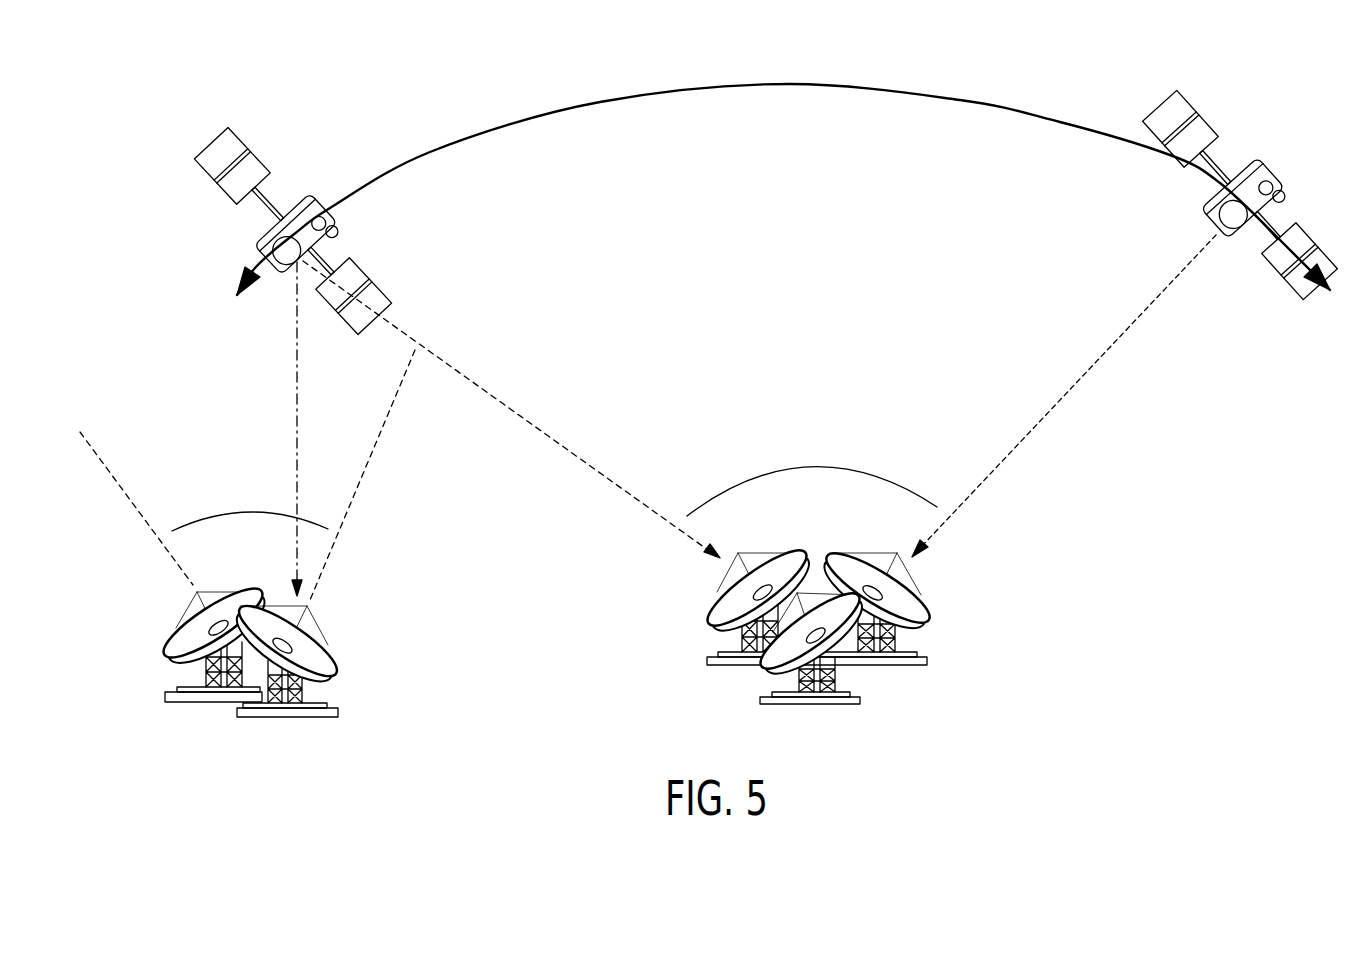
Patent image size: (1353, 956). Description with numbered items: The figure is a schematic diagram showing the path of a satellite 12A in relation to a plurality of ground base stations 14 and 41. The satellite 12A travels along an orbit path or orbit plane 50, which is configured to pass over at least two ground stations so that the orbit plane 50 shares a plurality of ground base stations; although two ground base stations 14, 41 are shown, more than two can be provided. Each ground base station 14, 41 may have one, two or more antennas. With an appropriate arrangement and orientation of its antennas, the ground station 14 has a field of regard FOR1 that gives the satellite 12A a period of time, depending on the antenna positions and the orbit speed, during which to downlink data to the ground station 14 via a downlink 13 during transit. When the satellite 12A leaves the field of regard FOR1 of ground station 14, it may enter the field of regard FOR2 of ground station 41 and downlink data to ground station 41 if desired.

The orbit plane 50 is at (787, 84).
The satellite 12A is at (313, 203).
The downlink 13 is at (526, 418).
The ground base station 41 is at (284, 718).
The ground base station 14 is at (815, 703).
The field of regard FOR1 is at (808, 468).
The field of regard FOR2 is at (248, 512).